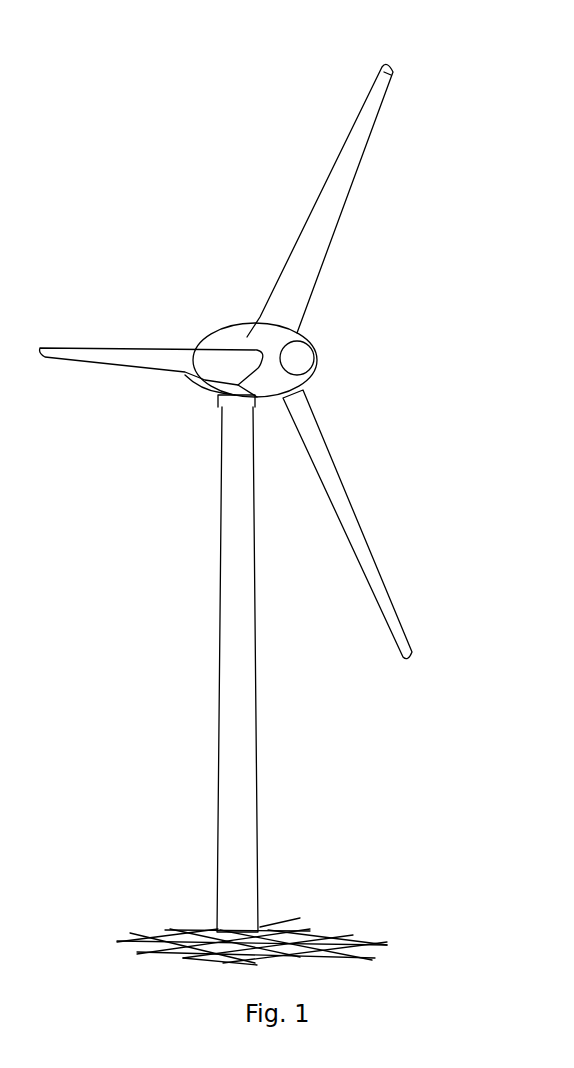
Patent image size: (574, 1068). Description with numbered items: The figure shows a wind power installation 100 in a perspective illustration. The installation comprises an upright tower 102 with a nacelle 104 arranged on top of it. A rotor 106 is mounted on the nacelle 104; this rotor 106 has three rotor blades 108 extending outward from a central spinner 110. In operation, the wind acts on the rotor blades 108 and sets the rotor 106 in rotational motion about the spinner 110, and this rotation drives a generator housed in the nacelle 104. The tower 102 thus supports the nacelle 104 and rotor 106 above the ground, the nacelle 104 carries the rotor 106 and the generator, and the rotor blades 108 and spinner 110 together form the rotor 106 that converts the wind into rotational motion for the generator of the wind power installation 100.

The wind power installation 100 is at (185, 461).
The tower 102 is at (243, 748).
The nacelle 104 is at (232, 335).
The rotor 106 is at (369, 296).
The rotor blades 108 is at (350, 163).
The spinner 110 is at (302, 360).